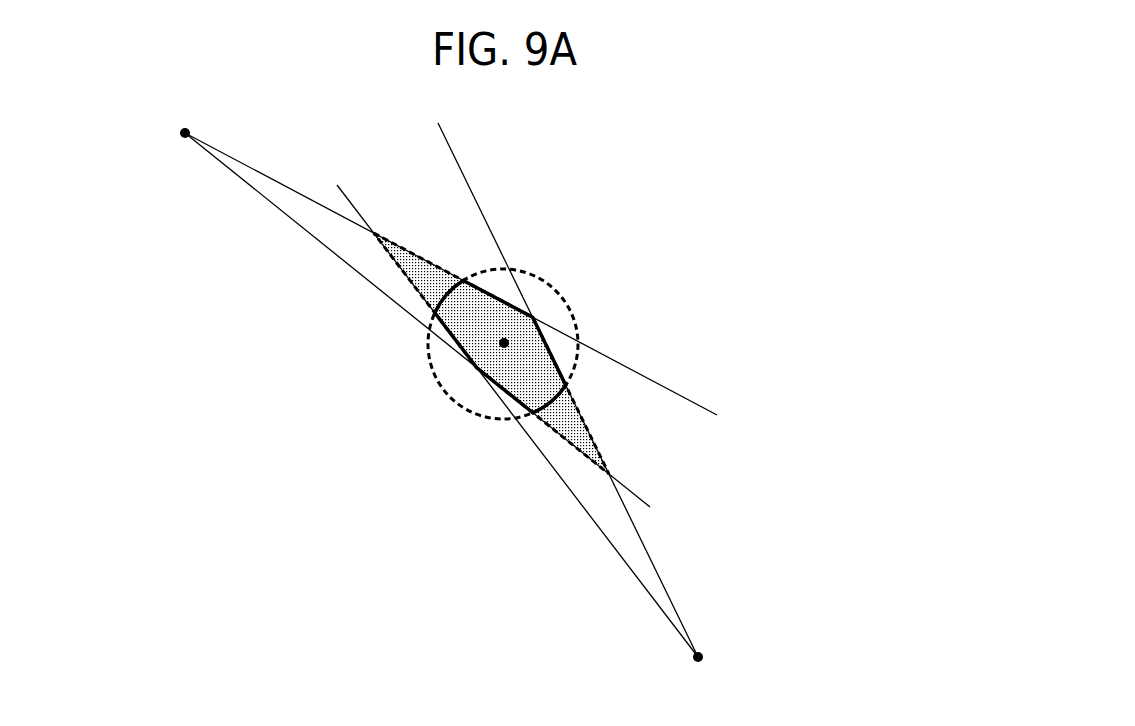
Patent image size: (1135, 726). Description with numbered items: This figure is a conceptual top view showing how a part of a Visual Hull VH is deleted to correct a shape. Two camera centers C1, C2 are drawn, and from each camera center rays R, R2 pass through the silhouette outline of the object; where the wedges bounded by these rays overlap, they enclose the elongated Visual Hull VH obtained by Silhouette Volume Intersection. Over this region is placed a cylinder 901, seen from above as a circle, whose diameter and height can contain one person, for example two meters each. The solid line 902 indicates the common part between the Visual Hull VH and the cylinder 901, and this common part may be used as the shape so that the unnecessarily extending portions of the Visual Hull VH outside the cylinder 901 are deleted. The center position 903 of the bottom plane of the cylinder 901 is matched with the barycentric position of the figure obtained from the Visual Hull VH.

The cylinder 901 is at (580, 332).
The solid line 902 is at (548, 400).
The center position 903 is at (505, 343).
The camera center C1 is at (703, 657).
The camera center C2 is at (190, 132).
The ray R is at (640, 533).
The ray R2 is at (283, 185).
The Visual Hull VH is at (457, 273).